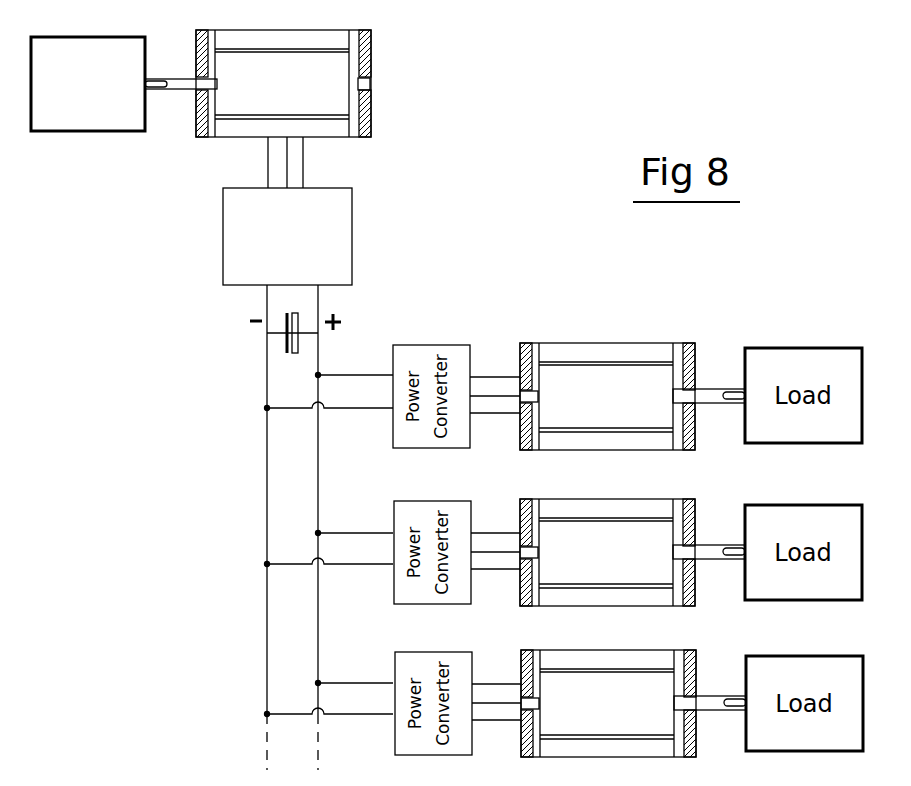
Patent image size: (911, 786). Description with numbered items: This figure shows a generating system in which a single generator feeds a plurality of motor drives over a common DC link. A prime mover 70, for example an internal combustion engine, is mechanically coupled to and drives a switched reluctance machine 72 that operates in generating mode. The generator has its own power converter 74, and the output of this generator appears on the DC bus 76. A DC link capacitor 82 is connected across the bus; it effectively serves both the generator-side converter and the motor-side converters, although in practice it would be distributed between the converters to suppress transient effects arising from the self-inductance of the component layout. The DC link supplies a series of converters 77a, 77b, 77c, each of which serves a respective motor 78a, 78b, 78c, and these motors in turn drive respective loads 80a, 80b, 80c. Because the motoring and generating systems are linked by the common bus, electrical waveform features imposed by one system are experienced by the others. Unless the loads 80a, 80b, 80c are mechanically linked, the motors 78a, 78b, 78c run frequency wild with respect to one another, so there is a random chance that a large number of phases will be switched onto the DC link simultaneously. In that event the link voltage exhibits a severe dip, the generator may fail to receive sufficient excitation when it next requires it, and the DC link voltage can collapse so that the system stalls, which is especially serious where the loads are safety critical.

The prime mover 70 is at (70, 133).
The switched reluctance machine 72 is at (372, 38).
The power converter 74 is at (223, 247).
The DC bus 76 is at (267, 443).
The DC link capacitor 82 is at (282, 340).
The converter 77a is at (458, 345).
The converter 77b is at (458, 501).
The converter 77c is at (458, 652).
The motor 78a is at (640, 343).
The motor 78b is at (640, 499).
The motor 78c is at (640, 650).
The load 80a is at (763, 348).
The load 80b is at (763, 505).
The load 80c is at (763, 656).